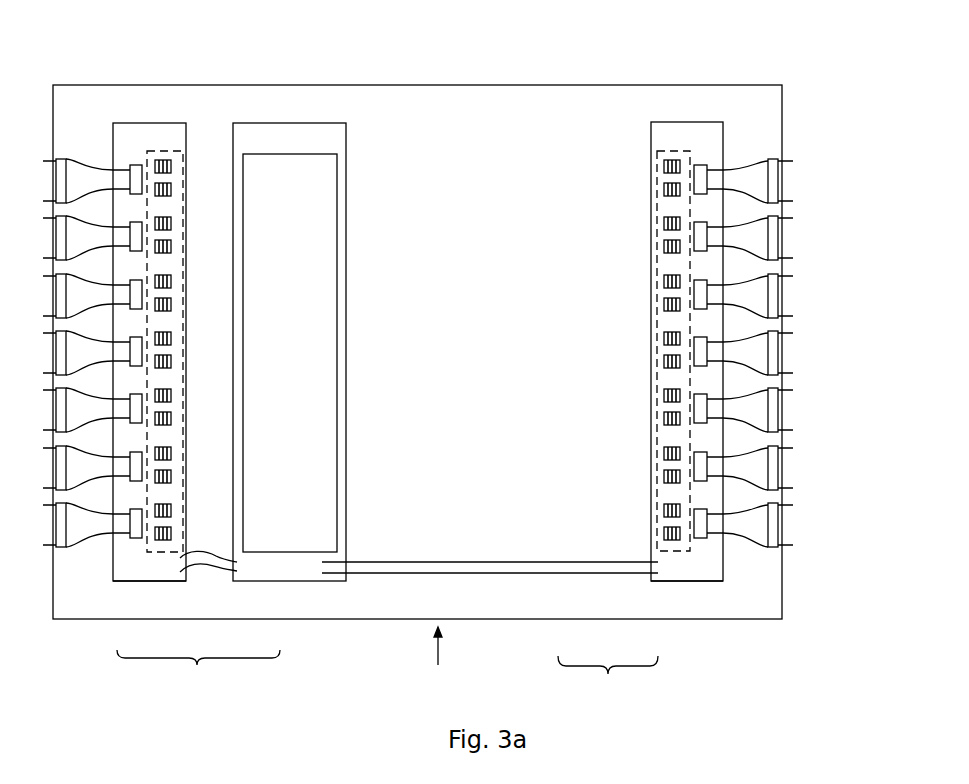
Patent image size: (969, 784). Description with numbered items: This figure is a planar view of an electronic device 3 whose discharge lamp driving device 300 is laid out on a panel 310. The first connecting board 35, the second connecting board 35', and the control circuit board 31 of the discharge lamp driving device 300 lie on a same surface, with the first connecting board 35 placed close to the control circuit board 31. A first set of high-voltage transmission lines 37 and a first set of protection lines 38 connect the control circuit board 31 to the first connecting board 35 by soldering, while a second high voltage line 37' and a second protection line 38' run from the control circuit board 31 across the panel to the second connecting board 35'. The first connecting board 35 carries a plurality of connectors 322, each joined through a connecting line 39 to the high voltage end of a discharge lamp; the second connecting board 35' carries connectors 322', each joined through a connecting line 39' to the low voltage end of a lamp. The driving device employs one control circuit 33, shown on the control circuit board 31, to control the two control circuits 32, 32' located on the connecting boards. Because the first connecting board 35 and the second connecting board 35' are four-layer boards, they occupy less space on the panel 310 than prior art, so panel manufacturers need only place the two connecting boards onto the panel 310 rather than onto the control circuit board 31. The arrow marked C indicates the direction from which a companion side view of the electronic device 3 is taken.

The electronic device 3 is at (424, 34).
The panel 310 is at (467, 85).
The control circuit 32 is at (155, 319).
The control circuit 32' is at (682, 315).
The connectors 322 is at (112, 298).
The connectors 322' is at (729, 294).
The control circuit 33 is at (298, 153).
The control circuit board 31 is at (298, 583).
The first connecting board 35 is at (147, 616).
The second connecting board 35' is at (683, 620).
The first set of high-voltage transmission lines 37 is at (200, 601).
The second high voltage line 37' is at (490, 610).
The first set of protection lines 38 is at (208, 608).
The second protection line 38' is at (490, 616).
The connecting line 39 is at (86, 302).
The connecting line 39' is at (757, 298).
The discharge lamp driving device 300 is at (387, 675).
The C-direction C is at (446, 646).